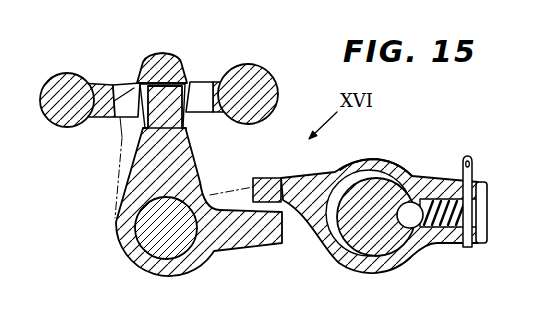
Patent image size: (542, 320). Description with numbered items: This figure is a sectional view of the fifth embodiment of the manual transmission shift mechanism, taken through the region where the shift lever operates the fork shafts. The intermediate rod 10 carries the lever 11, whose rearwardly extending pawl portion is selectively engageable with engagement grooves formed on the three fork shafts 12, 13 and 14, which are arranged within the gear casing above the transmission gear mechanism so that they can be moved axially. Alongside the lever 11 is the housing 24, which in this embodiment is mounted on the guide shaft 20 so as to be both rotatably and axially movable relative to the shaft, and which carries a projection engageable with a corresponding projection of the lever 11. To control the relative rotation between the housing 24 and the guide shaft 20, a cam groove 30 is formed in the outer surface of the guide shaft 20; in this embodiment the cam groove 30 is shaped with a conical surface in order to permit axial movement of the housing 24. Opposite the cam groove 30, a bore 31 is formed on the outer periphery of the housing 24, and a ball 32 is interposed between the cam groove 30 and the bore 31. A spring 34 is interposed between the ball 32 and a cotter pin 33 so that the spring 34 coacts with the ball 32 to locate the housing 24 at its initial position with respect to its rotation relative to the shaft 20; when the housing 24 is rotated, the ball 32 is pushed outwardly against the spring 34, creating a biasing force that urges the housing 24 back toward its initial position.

The intermediate rod 10 is at (150, 255).
The lever 11 is at (117, 230).
The fork shaft 12 is at (247, 65).
The fork shaft 13 is at (158, 55).
The fork shaft 14 is at (70, 73).
The guide shaft 20 is at (358, 247).
The housing 24 is at (350, 170).
The cam groove 30 is at (408, 250).
The bore 31 is at (488, 210).
The ball 32 is at (413, 200).
The cotter pin 33 is at (468, 162).
The spring 34 is at (443, 241).